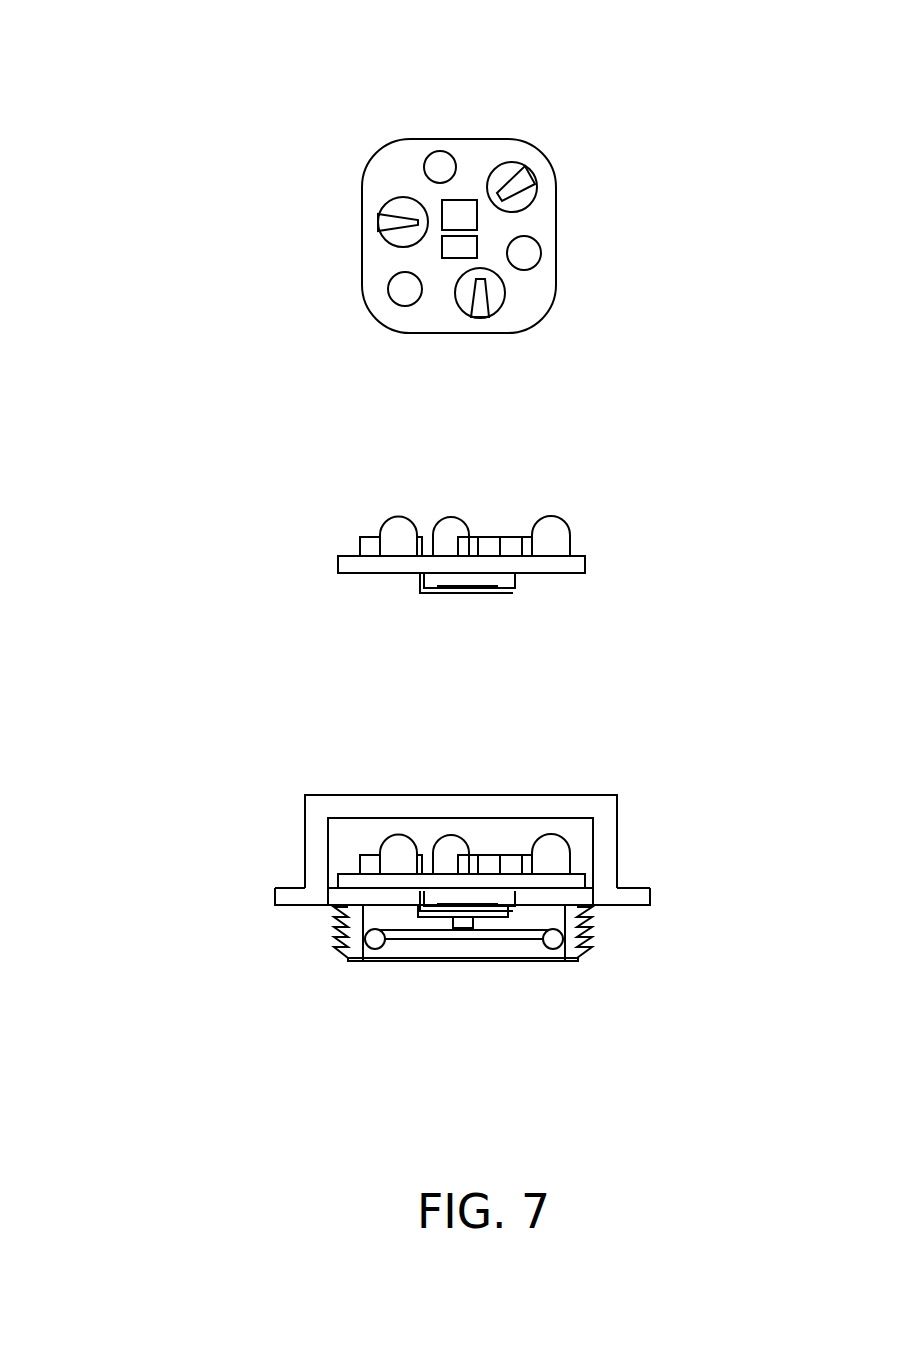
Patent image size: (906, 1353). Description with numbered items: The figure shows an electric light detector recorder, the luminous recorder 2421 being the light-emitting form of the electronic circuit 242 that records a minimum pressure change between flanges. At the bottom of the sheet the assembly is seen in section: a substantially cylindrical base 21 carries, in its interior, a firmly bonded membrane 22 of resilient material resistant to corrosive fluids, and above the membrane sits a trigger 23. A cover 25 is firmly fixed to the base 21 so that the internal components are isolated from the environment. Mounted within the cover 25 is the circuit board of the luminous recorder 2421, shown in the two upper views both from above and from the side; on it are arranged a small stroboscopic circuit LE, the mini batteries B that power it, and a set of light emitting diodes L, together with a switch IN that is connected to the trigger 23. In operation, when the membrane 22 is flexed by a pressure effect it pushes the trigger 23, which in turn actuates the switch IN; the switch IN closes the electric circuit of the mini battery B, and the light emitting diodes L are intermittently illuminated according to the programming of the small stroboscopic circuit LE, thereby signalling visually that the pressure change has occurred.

The electronic circuit 242 is at (225, 380).
The luminous recorder 2421 is at (377, 152).
The small stroboscopic circuit LE is at (458, 247).
The light emitting diodes L is at (440, 167).
The mini batteries B is at (520, 180).
The switch IN is at (478, 592).
The cover 25 is at (317, 812).
The base 21 is at (335, 945).
The trigger 23 is at (463, 912).
The membrane 22 is at (463, 938).